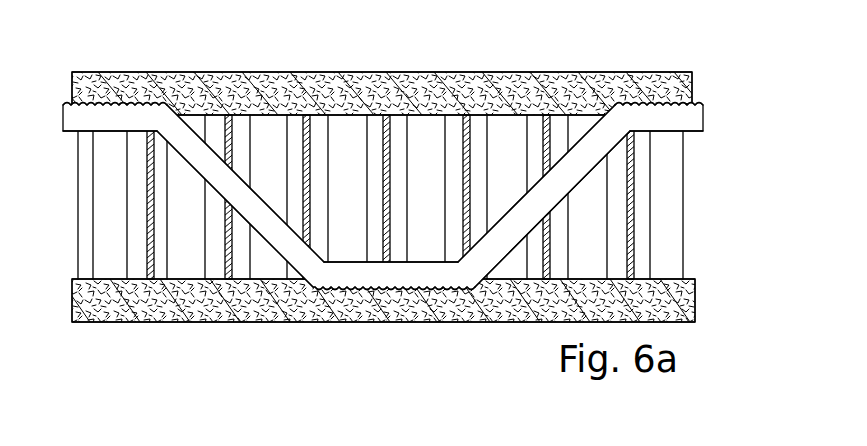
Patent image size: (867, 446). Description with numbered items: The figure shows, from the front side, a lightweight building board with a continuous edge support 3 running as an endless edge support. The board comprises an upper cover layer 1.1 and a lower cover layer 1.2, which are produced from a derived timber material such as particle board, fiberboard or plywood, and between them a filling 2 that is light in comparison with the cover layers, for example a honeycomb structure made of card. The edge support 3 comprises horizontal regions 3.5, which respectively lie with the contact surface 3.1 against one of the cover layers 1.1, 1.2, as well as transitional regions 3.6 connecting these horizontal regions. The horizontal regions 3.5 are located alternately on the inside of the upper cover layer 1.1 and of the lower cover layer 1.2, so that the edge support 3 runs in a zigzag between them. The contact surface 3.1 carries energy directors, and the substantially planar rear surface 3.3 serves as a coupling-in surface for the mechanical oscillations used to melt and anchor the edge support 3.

The upper cover layer 1.1 is at (678, 88).
The lower cover layer 1.2 is at (690, 292).
The filling 2 is at (425, 127).
The edge support 3 is at (705, 116).
The contact surface 3.1 is at (137, 99).
The rear surface 3.3 is at (113, 136).
The horizontal regions 3.5 is at (96, 100).
The transitional regions 3.6 is at (193, 142).